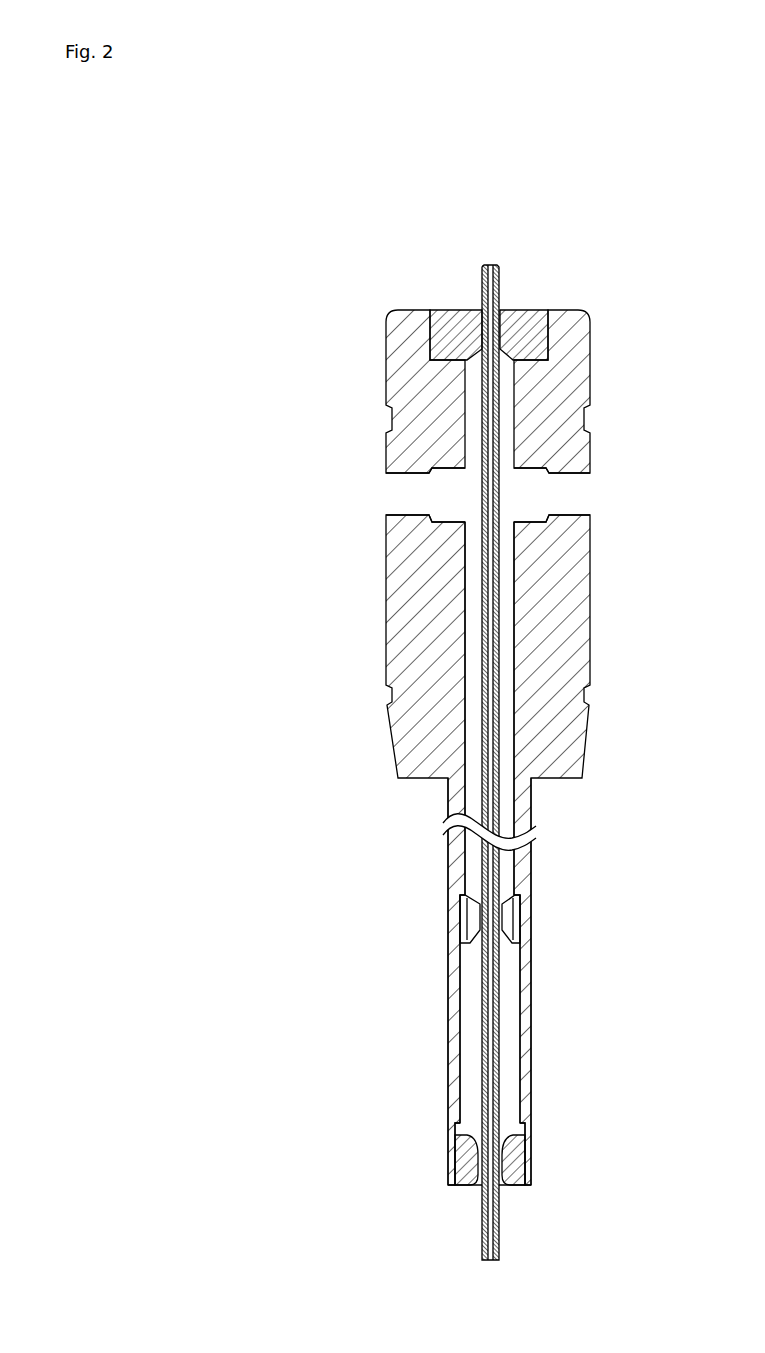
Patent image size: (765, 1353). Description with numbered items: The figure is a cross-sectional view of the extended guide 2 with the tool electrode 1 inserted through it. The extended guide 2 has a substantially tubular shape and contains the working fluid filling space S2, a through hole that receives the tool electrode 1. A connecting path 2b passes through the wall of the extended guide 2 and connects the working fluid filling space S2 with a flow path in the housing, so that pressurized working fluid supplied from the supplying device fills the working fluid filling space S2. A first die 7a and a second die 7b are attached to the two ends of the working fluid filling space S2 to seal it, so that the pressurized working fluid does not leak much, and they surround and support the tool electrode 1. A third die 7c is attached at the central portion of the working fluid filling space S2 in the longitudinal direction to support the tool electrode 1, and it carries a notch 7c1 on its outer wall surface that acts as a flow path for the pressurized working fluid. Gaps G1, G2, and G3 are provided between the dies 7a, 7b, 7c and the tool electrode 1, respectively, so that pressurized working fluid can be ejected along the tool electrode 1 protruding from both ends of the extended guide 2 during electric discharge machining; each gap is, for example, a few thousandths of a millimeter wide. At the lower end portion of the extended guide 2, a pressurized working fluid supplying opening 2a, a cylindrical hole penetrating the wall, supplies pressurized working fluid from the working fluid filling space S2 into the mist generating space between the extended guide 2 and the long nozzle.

The tool electrode 1 is at (501, 273).
The extended guide 2 is at (408, 612).
The pressurized working fluid supplying opening 2a is at (454, 1123).
The connecting path 2b is at (570, 497).
The first die 7a is at (451, 1176).
The second die 7b is at (562, 316).
The third die 7c is at (521, 895).
The notch 7c1 is at (462, 922).
The gap G1 is at (510, 1192).
The gap G2 is at (472, 305).
The gap G3 is at (510, 951).
The working fluid filling space S2 is at (511, 617).